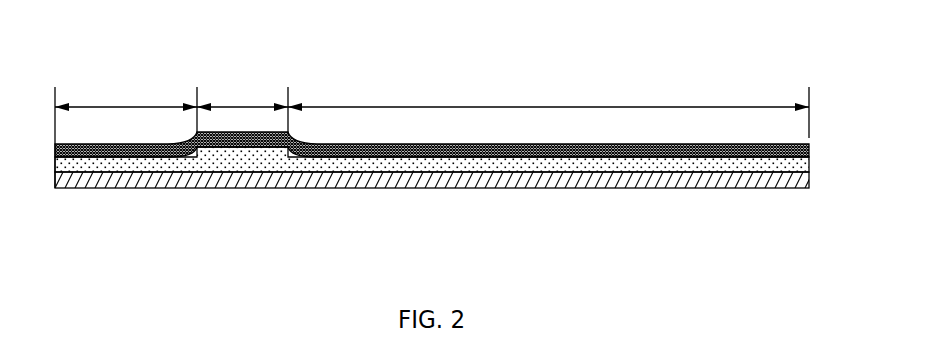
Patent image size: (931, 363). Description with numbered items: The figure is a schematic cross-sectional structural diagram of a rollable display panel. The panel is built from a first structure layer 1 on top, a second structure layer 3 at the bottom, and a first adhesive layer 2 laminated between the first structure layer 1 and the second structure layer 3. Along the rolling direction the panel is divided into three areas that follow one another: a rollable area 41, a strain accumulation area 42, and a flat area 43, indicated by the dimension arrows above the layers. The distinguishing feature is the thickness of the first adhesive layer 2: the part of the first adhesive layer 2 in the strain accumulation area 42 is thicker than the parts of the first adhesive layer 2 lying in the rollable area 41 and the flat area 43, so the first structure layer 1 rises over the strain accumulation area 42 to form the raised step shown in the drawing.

The first structure layer 1 is at (692, 147).
The first adhesive layer 2 is at (580, 164).
The second structure layer 3 is at (455, 173).
The rollable area 41 is at (518, 107).
The strain accumulation area 42 is at (242, 107).
The flat area 43 is at (115, 107).